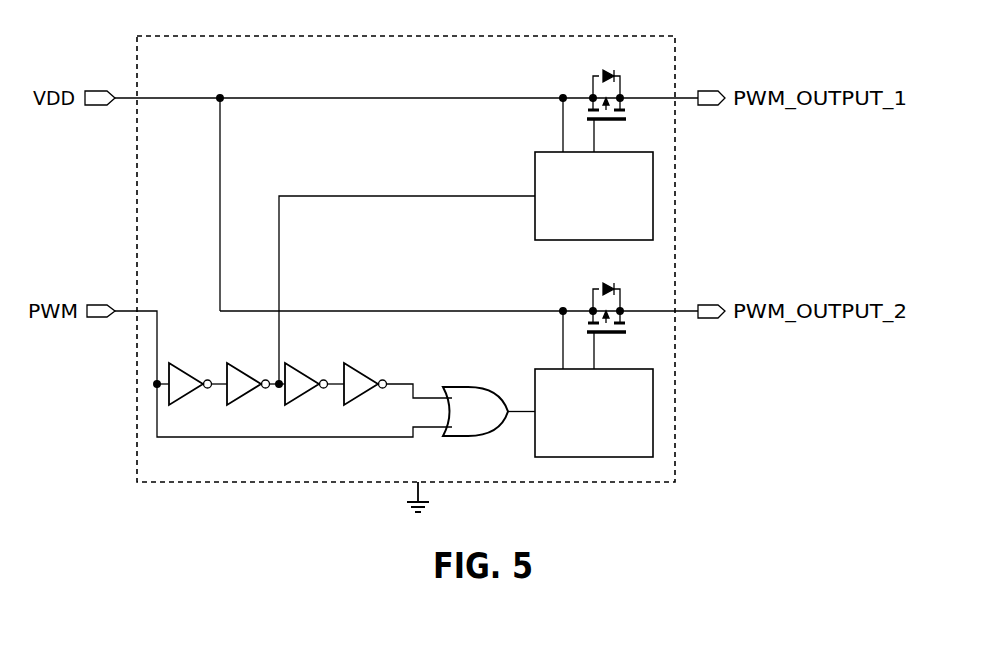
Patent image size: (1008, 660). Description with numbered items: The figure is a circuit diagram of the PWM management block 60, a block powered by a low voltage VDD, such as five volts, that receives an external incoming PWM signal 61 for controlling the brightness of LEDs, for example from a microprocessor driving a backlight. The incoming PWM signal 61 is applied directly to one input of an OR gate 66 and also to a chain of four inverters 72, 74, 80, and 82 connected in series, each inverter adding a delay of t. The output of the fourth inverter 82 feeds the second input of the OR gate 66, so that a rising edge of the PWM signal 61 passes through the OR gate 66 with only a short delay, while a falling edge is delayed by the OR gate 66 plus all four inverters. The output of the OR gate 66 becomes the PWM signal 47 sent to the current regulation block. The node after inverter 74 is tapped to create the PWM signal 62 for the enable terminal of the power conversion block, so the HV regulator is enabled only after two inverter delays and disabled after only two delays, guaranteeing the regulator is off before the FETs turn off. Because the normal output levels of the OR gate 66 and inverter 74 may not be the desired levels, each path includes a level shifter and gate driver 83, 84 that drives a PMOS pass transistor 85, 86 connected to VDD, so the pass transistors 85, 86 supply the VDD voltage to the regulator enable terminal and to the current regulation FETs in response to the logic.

The PWM signal 47 is at (714, 305).
The PWM management block 60 is at (676, 453).
The PWM signal 61 is at (98, 305).
The PWM signal 62 is at (714, 92).
The OR gate 66 is at (462, 387).
The inverter 72 is at (186, 369).
The inverter 74 is at (244, 369).
The inverter 80 is at (302, 369).
The inverter 82 is at (361, 369).
The level shifter/gate driver 83 is at (535, 164).
The level shifter/gate driver 84 is at (535, 381).
The PMOS pass transistor 85 is at (625, 108).
The PMOS pass transistor 86 is at (625, 321).